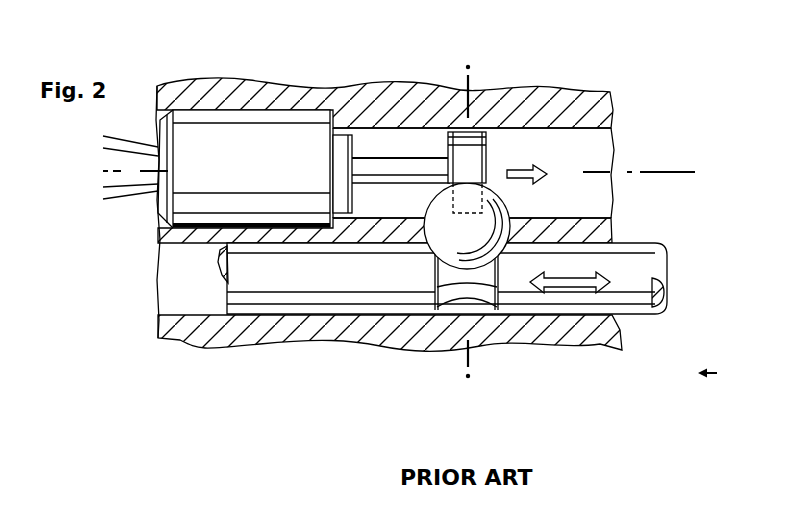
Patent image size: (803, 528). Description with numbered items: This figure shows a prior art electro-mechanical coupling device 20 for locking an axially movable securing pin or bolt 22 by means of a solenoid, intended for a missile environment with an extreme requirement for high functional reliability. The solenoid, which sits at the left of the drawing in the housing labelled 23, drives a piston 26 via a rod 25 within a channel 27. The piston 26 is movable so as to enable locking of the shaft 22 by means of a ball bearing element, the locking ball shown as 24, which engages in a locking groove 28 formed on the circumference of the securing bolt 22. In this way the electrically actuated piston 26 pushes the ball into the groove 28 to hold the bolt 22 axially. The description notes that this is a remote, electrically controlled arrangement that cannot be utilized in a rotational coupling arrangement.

The device 20 is at (720, 374).
The securing bolt 22 is at (589, 303).
The solenoid actuator body 23 is at (230, 138).
The valve ball 24 is at (455, 218).
The rod 25 is at (388, 168).
The piston 26 is at (470, 157).
The channel 27 is at (567, 152).
The locking groove 28 is at (467, 303).